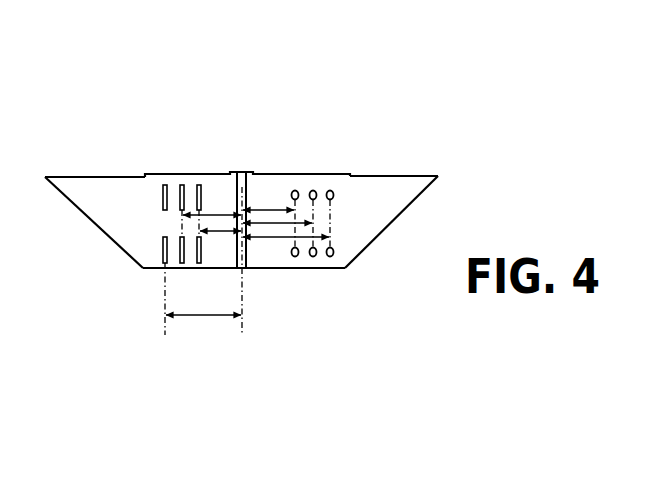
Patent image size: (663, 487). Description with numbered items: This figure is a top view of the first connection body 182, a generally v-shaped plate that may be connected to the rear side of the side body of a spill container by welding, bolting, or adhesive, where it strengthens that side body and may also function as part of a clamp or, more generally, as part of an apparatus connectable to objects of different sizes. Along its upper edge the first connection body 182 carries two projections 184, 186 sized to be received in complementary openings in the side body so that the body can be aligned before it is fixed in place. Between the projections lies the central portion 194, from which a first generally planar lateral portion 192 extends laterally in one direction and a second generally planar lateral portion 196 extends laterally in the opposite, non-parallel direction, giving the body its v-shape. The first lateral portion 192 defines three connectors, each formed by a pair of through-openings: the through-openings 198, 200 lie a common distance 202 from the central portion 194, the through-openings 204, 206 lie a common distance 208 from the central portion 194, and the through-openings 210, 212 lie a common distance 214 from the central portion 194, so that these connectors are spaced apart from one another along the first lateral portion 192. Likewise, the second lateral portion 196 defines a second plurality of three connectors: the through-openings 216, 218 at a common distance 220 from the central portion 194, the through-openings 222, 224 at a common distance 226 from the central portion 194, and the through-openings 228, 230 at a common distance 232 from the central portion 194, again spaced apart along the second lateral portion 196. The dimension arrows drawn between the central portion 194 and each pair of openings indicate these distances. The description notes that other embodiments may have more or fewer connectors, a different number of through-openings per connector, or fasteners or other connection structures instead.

The first connection body 182 is at (410, 176).
The projection 184 is at (137, 173).
The projection 186 is at (350, 173).
The first generally planar lateral portion 192 is at (108, 240).
The central portion 194 is at (246, 268).
The second generally planar lateral portion 196 is at (287, 270).
The through-opening 198 is at (160, 270).
The through-opening 200 is at (162, 176).
The common distance 202 is at (208, 316).
The through-opening 204 is at (178, 270).
The through-opening 206 is at (181, 176).
The common distance 208 is at (221, 230).
The through-opening 210 is at (198, 270).
The through-opening 212 is at (199, 176).
The common distance 214 is at (215, 190).
The through-opening 216 is at (303, 268).
The through-opening 218 is at (300, 184).
The common distance 220 is at (262, 208).
The through-opening 222 is at (319, 268).
The through-opening 224 is at (318, 184).
The common distance 226 is at (268, 221).
The through-opening 228 is at (337, 268).
The through-opening 230 is at (336, 184).
The common distance 232 is at (277, 235).